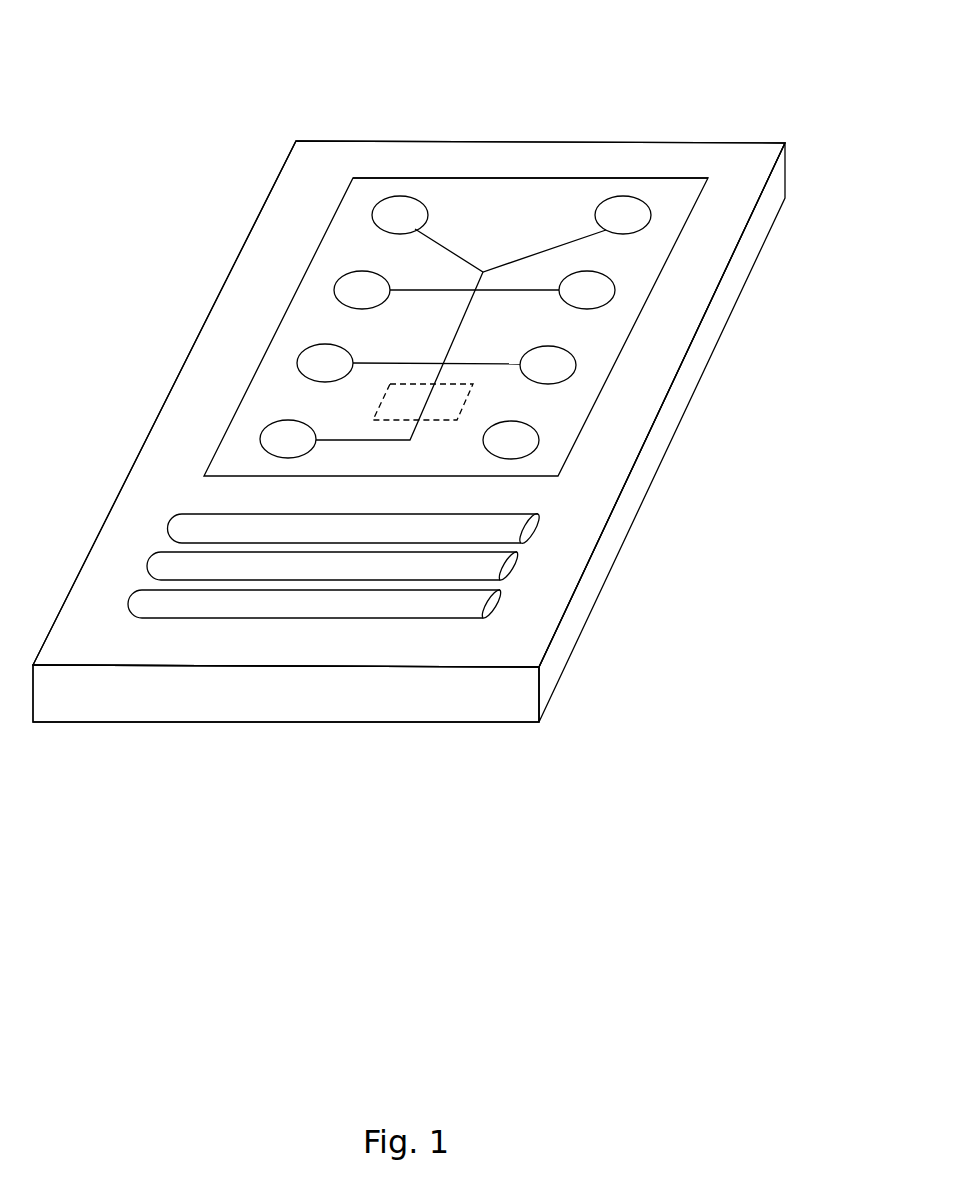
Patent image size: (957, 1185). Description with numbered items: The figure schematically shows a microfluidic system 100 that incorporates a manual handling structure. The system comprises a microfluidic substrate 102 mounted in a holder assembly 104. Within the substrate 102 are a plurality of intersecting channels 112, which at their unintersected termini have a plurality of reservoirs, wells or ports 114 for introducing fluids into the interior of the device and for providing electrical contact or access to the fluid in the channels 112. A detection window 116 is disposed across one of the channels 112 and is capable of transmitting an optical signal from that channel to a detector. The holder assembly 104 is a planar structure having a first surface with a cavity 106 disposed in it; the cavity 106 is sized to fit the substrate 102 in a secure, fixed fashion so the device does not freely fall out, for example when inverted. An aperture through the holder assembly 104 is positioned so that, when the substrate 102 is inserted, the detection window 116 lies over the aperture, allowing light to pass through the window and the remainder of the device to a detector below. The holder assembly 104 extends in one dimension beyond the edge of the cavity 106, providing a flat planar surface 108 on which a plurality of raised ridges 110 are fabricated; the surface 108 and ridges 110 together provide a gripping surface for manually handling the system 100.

The microfluidic system 100 is at (232, 95).
The microfluidic substrate 102 is at (538, 217).
The holder assembly 104 is at (668, 162).
The cavity 106 is at (607, 385).
The flat planar surface 108 is at (297, 647).
The raised ridges 110 is at (497, 605).
The intersecting channels 112 is at (445, 250).
The reservoirs, wells or ports 114 is at (617, 290).
The detection window 116 is at (382, 399).